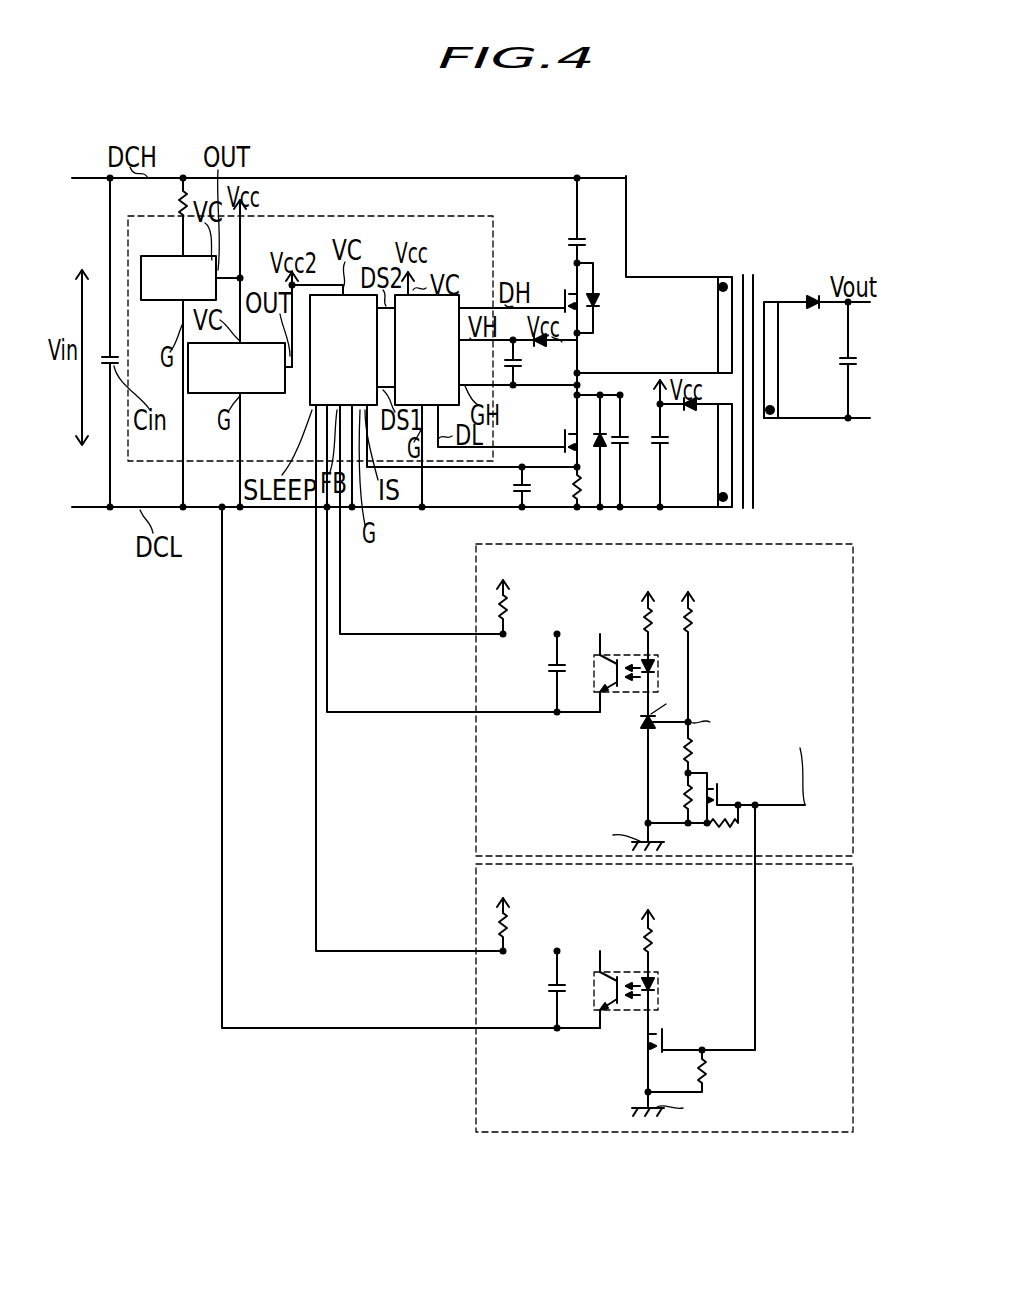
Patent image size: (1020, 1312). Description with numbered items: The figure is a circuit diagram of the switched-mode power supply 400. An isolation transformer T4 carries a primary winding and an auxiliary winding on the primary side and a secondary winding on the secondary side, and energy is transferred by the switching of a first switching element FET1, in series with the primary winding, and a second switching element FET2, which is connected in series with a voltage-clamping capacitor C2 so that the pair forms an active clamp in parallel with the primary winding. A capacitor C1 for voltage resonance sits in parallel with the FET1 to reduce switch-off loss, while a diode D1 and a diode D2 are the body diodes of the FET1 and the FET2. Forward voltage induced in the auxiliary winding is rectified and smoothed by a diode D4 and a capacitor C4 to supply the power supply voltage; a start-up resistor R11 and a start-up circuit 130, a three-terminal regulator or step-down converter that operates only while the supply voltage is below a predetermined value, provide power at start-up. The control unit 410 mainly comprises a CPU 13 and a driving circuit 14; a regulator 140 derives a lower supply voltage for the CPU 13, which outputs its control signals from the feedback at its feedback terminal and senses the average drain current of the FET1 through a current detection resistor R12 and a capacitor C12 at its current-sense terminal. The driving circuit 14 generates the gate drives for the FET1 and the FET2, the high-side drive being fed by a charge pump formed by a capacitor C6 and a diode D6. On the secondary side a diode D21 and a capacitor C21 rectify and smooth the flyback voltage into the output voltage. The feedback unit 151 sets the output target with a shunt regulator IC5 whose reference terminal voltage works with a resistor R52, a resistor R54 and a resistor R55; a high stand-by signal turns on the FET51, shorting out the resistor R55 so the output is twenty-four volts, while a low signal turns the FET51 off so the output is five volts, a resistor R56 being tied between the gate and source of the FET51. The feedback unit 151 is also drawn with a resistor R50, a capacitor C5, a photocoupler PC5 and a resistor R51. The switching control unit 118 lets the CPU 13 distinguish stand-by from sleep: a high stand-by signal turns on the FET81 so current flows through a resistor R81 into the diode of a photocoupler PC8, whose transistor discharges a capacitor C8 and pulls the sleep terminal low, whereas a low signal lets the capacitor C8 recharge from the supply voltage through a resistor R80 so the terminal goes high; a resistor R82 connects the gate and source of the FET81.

The switched-mode power supply 400 is at (624, 176).
The control unit 410 is at (360, 216).
The start-up circuit 130 is at (180, 301).
The regulator 140 is at (260, 394).
The CPU 13 is at (310, 380).
The driving circuit 14 is at (460, 372).
The feedback unit 151 is at (667, 543).
The switching control unit 118 is at (474, 1077).
The start-up resistor R11 is at (178, 198).
The current detection resistor R12 is at (576, 495).
The capacitor C12 is at (516, 488).
The capacitor for voltage clamping C2 is at (573, 242).
The second switching element FET2 is at (566, 293).
The first switching element FET1 is at (565, 434).
The body diode of the FET2 D2 is at (600, 299).
The body diode of the FET1 D1 is at (602, 432).
The diode D6 is at (550, 346).
The capacitor C6 is at (523, 368).
The capacitor for voltage resonance C1 is at (621, 438).
The capacitor C4 is at (657, 444).
The diode D4 is at (691, 409).
The isolation transformer T4 is at (750, 277).
The diode D21 is at (813, 307).
The capacitor C21 is at (843, 363).
The resistor R50 is at (510, 603).
The capacitor C5 is at (548, 667).
The photocoupler PC5 is at (613, 694).
The resistor R51 is at (644, 620).
The resistor R52 is at (693, 620).
The shunt regulator IC5 is at (642, 724).
The resistor R54 is at (692, 744).
The resistor R55 is at (683, 794).
The FET FET51 is at (734, 778).
The resistor R56 is at (730, 826).
The resistor R80 is at (510, 923).
The capacitor C8 is at (548, 988).
The photocoupler PC8 is at (620, 1012).
The resistor R81 is at (645, 940).
The FET FET81 is at (668, 1040).
The resistor R82 is at (707, 1068).